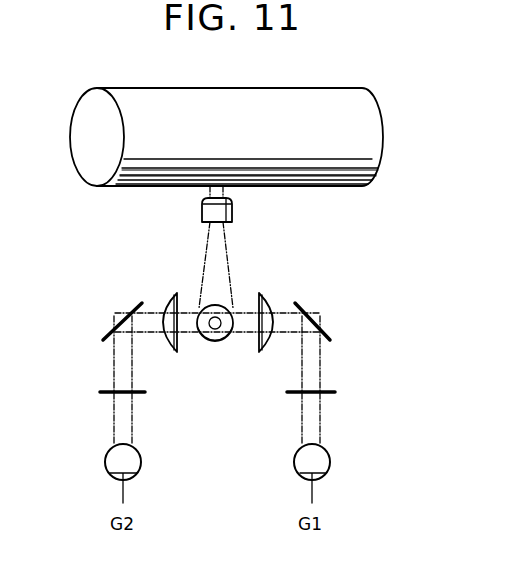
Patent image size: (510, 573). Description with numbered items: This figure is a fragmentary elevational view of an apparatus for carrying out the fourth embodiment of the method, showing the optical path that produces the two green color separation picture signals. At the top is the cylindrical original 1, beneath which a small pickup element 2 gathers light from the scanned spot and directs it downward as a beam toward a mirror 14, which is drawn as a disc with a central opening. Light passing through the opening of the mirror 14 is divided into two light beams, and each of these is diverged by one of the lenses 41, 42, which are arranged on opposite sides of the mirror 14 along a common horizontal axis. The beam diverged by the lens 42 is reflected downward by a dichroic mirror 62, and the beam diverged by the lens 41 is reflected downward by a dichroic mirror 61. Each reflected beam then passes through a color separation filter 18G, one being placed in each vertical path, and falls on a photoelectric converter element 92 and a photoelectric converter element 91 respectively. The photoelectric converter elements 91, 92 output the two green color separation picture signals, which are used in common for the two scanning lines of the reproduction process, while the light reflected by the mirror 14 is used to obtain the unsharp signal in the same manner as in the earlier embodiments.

The original 1 is at (135, 178).
The light beam pickup element 2 is at (202, 214).
The lens 42 is at (171, 297).
The lens 41 is at (268, 297).
The mirror 14 is at (215, 342).
The dichroic mirror 62 is at (116, 328).
The dichroic mirror 61 is at (318, 322).
The color separation filter 18G is at (330, 391).
The photoelectric converter element 92 is at (108, 457).
The photoelectric converter element 91 is at (325, 454).